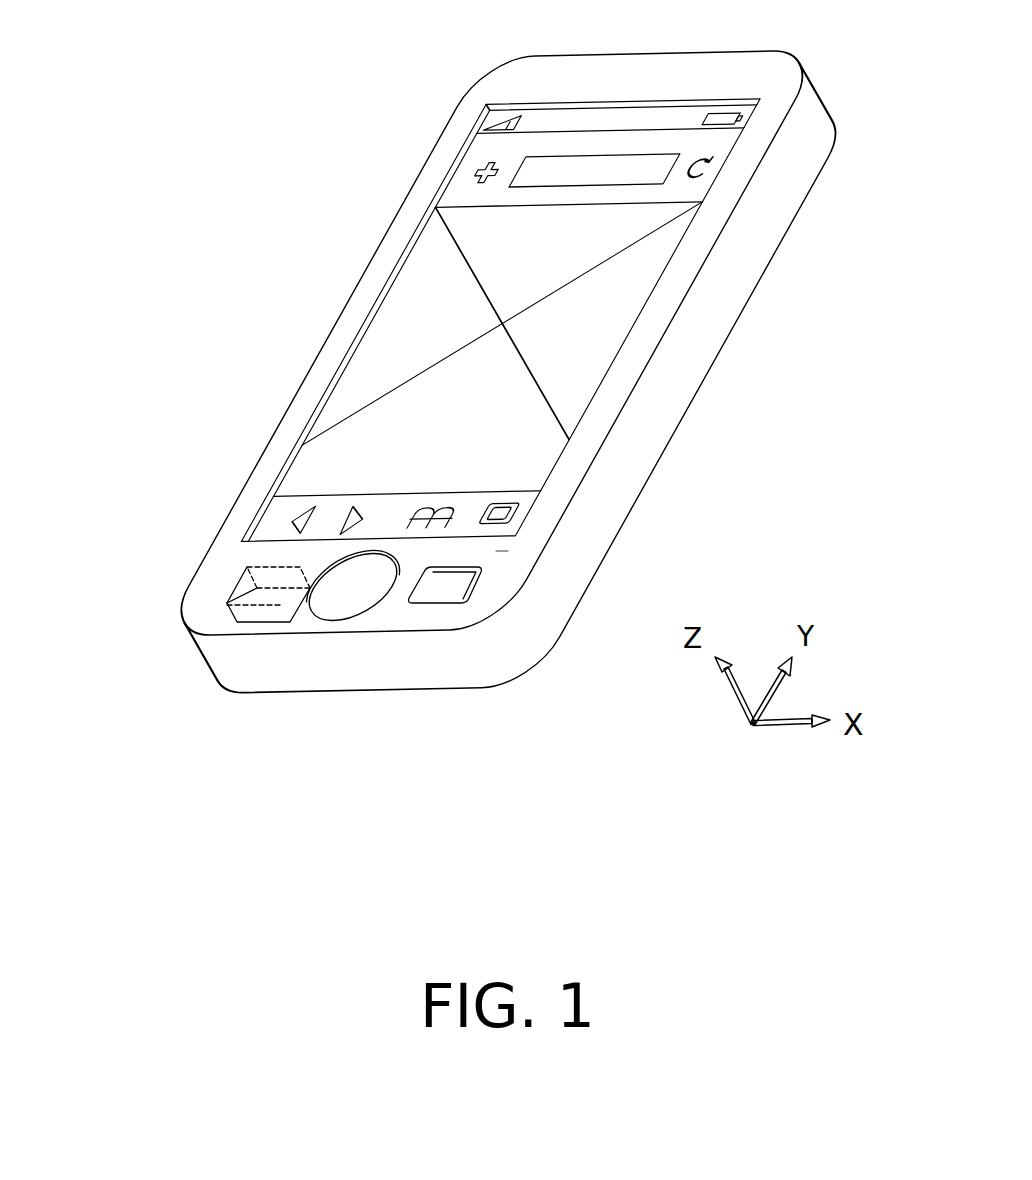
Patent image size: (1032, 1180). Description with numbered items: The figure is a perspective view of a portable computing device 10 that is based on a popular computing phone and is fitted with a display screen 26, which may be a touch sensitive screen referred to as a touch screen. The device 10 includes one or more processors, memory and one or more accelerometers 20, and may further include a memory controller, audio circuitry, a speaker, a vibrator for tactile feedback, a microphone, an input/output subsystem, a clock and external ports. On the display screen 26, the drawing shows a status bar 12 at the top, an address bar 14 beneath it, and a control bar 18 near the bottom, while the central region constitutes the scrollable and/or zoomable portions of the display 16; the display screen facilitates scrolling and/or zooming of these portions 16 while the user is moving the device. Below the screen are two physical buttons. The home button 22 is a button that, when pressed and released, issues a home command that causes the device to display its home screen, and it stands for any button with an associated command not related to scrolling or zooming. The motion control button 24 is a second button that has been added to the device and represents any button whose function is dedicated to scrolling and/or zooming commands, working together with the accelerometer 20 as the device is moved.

The computing device 10 is at (548, 68).
The status bar 12 is at (495, 117).
The address bar 14 is at (480, 150).
The scrollable and/or zoomable portions of the display 16 is at (392, 325).
The control bar 18 is at (275, 522).
The accelerometer 20 is at (260, 593).
The home button 22 is at (345, 606).
The motion control button 24 is at (453, 593).
The display screen 26 is at (502, 553).